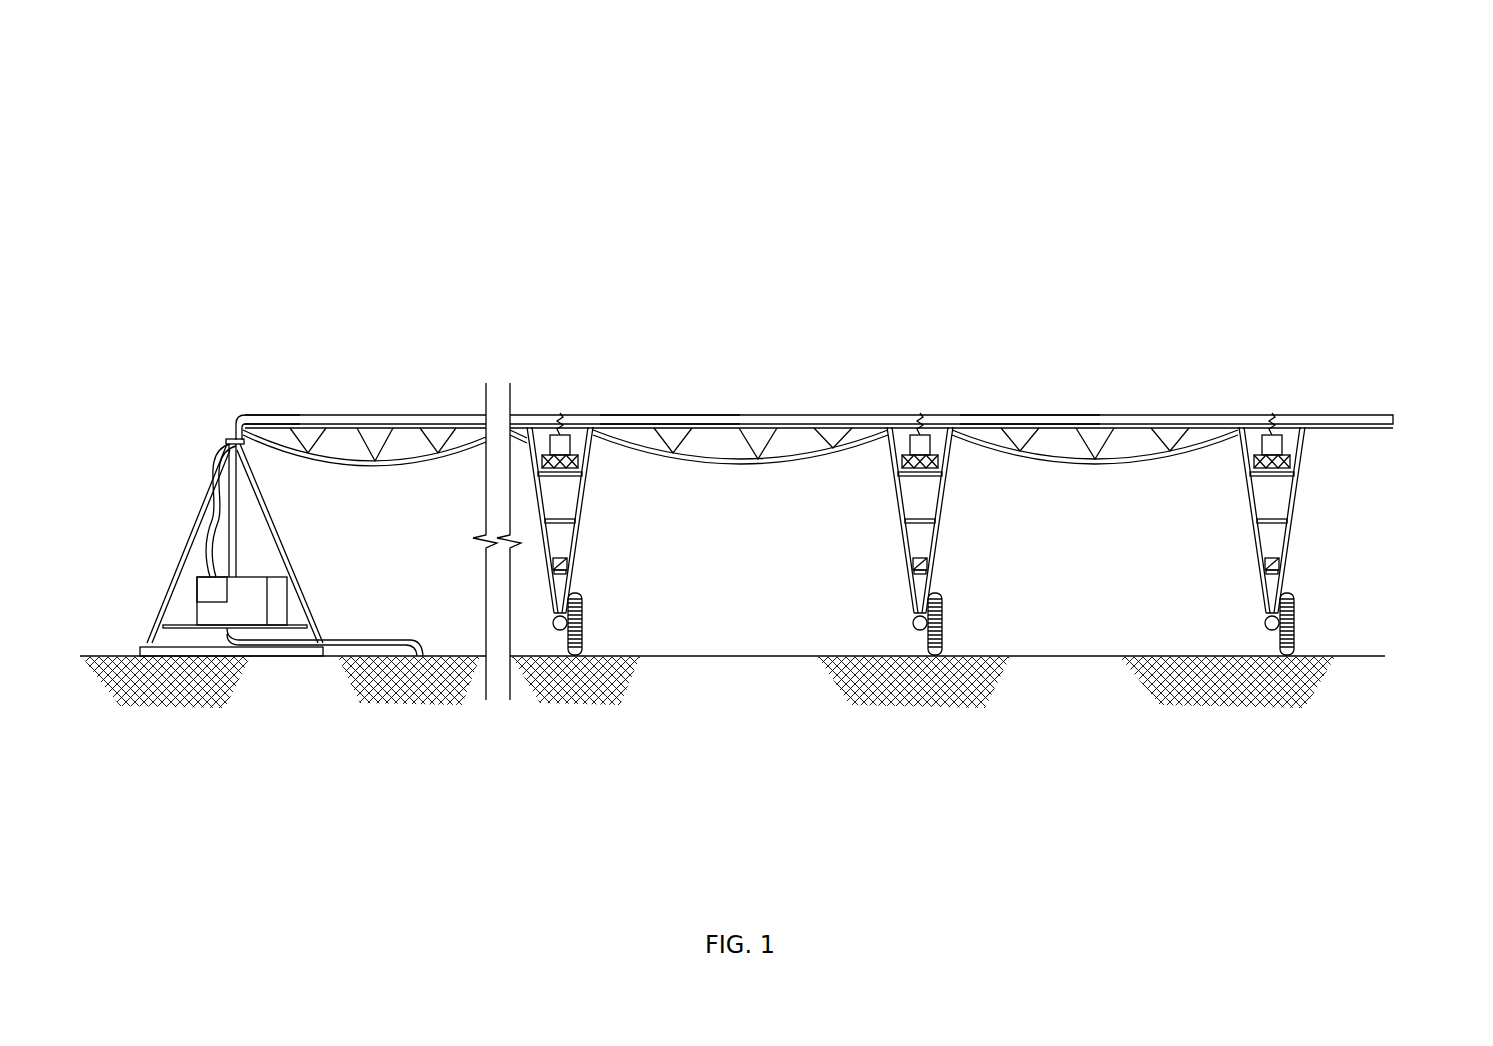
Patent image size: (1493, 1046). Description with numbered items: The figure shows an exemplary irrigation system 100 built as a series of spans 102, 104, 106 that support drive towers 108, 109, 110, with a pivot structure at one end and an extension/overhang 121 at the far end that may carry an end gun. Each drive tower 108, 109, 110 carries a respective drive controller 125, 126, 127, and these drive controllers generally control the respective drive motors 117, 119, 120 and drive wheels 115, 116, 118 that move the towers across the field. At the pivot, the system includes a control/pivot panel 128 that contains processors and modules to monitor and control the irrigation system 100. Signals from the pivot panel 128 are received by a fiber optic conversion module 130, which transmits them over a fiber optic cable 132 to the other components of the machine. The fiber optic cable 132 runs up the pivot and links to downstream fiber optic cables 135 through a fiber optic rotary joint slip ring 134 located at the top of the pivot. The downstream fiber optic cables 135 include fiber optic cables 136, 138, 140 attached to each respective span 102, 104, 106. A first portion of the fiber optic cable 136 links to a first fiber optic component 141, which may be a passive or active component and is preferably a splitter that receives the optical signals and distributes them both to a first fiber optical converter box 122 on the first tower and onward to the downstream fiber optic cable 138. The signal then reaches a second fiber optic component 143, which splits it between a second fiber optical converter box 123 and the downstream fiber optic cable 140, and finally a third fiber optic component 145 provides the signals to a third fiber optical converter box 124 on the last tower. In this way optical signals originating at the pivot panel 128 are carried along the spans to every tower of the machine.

The irrigation system 100 is at (1068, 120).
The span 102 is at (347, 425).
The span 104 is at (728, 423).
The span 106 is at (1085, 425).
The drive tower 108 is at (583, 512).
The drive tower 109 is at (940, 511).
The drive tower 110 is at (1295, 497).
The drive wheel 115 is at (582, 600).
The drive wheel 116 is at (940, 605).
The drive motor 117 is at (565, 560).
The drive wheel 118 is at (1292, 622).
The drive motor 119 is at (922, 562).
The drive motor 120 is at (1278, 565).
The extension/overhang 121 is at (1350, 415).
The first fiber optical converter box 122 is at (556, 433).
The second fiber optical converter box 123 is at (910, 436).
The third fiber optical converter box 124 is at (1266, 452).
The drive controller 125 is at (578, 458).
The drive controller 126 is at (947, 440).
The drive controller 127 is at (1292, 458).
The control/pivot panel 128 is at (248, 588).
The fiber optic conversion module 130 is at (202, 592).
The fiber optic cable 132 is at (215, 490).
The fiber optic rotary joint slip ring 134 is at (228, 438).
The downstream fiber optic cables 135 is at (236, 412).
The fiber optic cable 136 is at (275, 415).
The fiber optic cable 138 is at (670, 420).
The fiber optic cable 140 is at (1025, 418).
The first fiber optic component 141 is at (560, 432).
The second fiber optic component 143 is at (918, 413).
The third fiber optic component 145 is at (1275, 432).